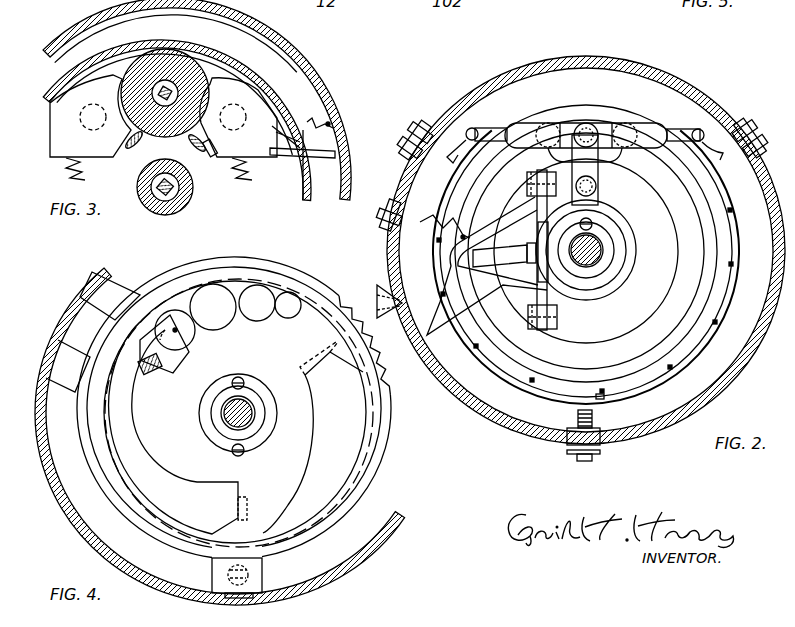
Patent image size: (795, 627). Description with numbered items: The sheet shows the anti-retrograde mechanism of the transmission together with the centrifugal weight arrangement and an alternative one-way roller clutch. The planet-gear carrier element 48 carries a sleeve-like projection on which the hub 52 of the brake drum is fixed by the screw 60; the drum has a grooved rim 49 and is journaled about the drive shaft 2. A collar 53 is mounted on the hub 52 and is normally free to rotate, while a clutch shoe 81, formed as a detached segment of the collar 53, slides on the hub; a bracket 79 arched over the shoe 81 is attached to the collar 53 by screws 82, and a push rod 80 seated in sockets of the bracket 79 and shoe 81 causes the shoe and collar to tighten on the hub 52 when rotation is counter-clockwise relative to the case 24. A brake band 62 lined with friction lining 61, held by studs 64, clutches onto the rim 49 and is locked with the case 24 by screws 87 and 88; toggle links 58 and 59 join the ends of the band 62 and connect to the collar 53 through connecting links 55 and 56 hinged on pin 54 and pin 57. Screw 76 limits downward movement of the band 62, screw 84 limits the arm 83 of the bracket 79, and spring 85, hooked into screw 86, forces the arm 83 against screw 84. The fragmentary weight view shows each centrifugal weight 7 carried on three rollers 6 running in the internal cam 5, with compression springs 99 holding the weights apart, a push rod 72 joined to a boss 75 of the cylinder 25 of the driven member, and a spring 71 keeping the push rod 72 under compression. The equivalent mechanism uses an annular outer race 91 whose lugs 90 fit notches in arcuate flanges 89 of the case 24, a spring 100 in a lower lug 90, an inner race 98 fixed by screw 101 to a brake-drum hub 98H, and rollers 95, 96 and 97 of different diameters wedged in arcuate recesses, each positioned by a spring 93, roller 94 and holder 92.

In FIG. 3, the drive shaft 2 is at (181, 206).
In FIG. 4, the drive shaft 2 is at (221, 414).
In FIG. 2, the drive shaft 2 is at (603, 249).
In FIG. 3, the internal cam 5 is at (227, 62).
In FIG. 3, the rollers 6 is at (122, 95).
In FIG. 3, the centrifugal weight 7 is at (211, 157).
In FIG. 4, the case 24 is at (104, 268).
In FIG. 2, the case 24 is at (682, 77).
In FIG. 3, the cylinder of the driven member 25 is at (324, 70).
In FIG. 4, the planet-gear carrier element 48 is at (268, 414).
In FIG. 2, the planet-gear carrier element 48 is at (602, 268).
In FIG. 2, the grooved rim 49 is at (591, 105).
In FIG. 2, the hub 52 is at (614, 262).
In FIG. 2, the collar 53 is at (637, 237).
In FIG. 2, the pin 54 is at (598, 188).
In FIG. 2, the connecting link 55 is at (599, 168).
In FIG. 2, the connecting link 56 is at (622, 150).
In FIG. 2, the pin 57 is at (580, 124).
In FIG. 2, the toggle link 58 is at (540, 122).
In FIG. 2, the toggle link 59 is at (629, 122).
In FIG. 4, the screw 60 is at (246, 380).
In FIG. 2, the screw 60 is at (593, 223).
In FIG. 2, the friction lining 61 is at (727, 206).
In FIG. 2, the brake band 62 is at (736, 250).
In FIG. 2, the studs 64 is at (479, 362).
In FIG. 3, the spring 71 is at (334, 118).
In FIG. 3, the push rod 72 is at (290, 158).
In FIG. 3, the boss 75 is at (326, 202).
In FIG. 2, the screw 76 is at (573, 414).
In FIG. 2, the bracket 79 is at (511, 222).
In FIG. 2, the push rod 80 is at (526, 190).
In FIG. 2, the clutch shoe 81 is at (512, 296).
In FIG. 2, the screws 82 is at (528, 318).
In FIG. 2, the arm 83 is at (438, 326).
In FIG. 2, the screw 84 is at (380, 290).
In FIG. 2, the spring 85 is at (420, 226).
In FIG. 2, the screw 86 is at (380, 219).
In FIG. 2, the screw 87 is at (418, 124).
In FIG. 2, the screw 88 is at (751, 120).
In FIG. 4, the arcuate flanges 89 is at (86, 270).
In FIG. 4, the lugs 90 is at (82, 312).
In FIG. 4, the annular outer race 91 is at (170, 274).
In FIG. 4, the holder 92 is at (140, 340).
In FIG. 4, the spring 93 is at (146, 372).
In FIG. 4, the roller 94 is at (183, 352).
In FIG. 4, the roller 95 is at (215, 328).
In FIG. 4, the roller 96 is at (256, 312).
In FIG. 4, the roller 97 is at (288, 312).
In FIG. 4, the inner race 98 is at (318, 396).
In FIG. 4, the brake-drum hub 98H is at (283, 437).
In FIG. 3, the compression springs 99 is at (68, 172).
In FIG. 4, the spring 100 is at (262, 577).
In FIG. 4, the screw 101 is at (248, 452).